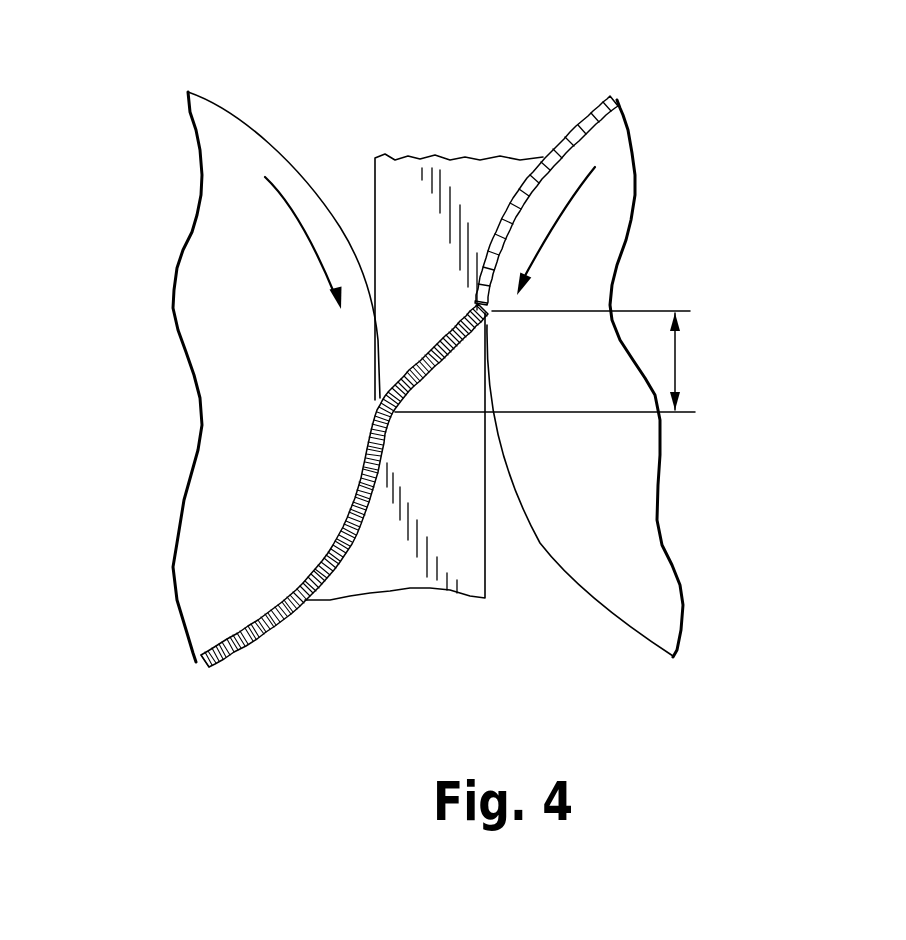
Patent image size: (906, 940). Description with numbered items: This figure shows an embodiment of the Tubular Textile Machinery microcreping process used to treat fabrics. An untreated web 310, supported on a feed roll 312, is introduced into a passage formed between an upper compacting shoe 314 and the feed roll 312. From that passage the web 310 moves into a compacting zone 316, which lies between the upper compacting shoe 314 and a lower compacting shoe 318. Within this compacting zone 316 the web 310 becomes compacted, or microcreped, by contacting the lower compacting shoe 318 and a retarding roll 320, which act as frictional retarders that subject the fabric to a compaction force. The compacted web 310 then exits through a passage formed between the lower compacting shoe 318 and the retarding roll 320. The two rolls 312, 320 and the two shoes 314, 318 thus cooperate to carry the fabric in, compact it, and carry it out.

The untreated web 310 is at (592, 117).
The feed roll 312 is at (588, 228).
The upper compacting shoe 314 is at (392, 168).
The compacting zone 316 is at (680, 364).
The lower compacting shoe 318 is at (450, 562).
The retarding roll 320 is at (218, 160).